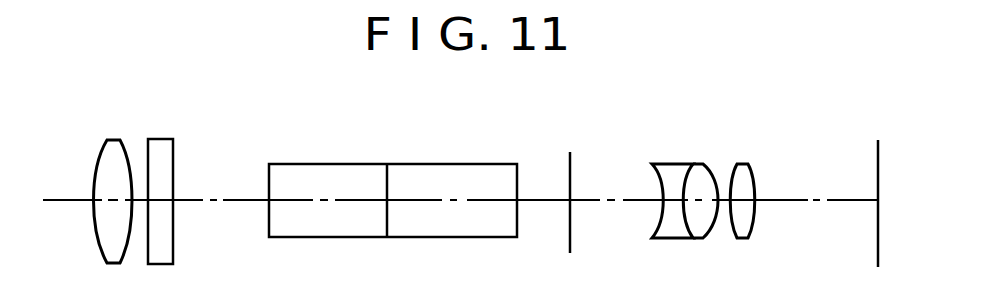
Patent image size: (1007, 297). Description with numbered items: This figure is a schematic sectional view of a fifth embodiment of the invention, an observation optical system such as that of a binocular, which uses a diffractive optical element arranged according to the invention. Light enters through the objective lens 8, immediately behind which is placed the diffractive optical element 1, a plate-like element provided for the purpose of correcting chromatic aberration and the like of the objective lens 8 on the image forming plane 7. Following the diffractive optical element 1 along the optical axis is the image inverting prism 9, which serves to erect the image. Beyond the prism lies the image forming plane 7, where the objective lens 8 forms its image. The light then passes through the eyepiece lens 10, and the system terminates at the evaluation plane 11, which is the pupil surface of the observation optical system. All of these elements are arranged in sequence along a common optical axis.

The objective lens 8 is at (113, 153).
The diffractive optical element 1 is at (163, 148).
The image inverting prism 9 is at (342, 183).
The image forming plane 7 is at (569, 180).
The eyepiece lens 10 is at (723, 163).
The evaluation plane 11 is at (877, 167).